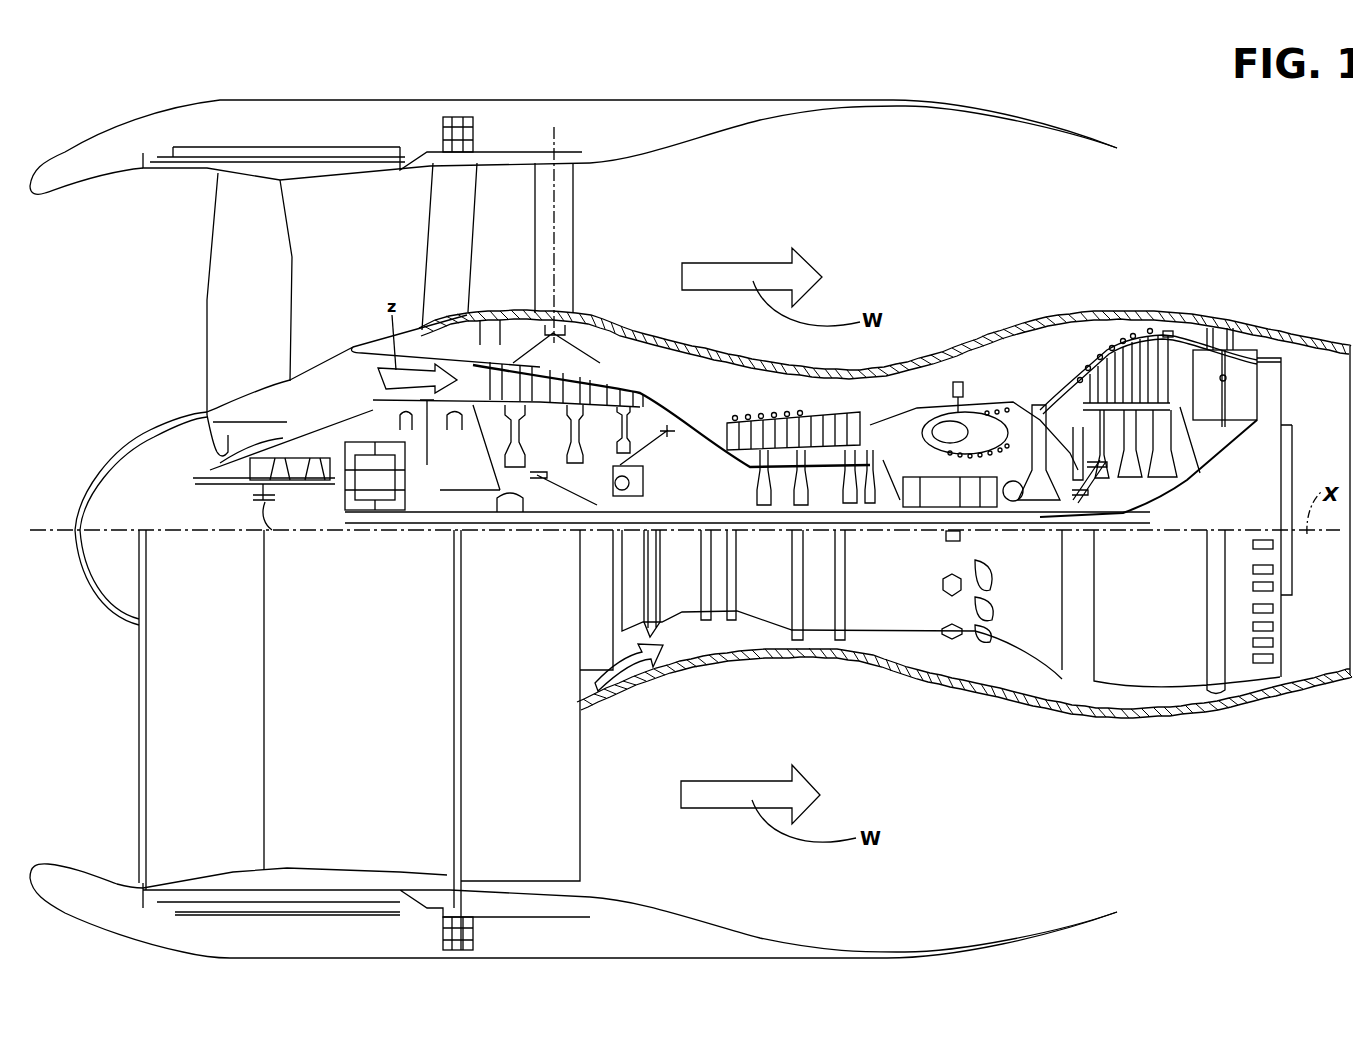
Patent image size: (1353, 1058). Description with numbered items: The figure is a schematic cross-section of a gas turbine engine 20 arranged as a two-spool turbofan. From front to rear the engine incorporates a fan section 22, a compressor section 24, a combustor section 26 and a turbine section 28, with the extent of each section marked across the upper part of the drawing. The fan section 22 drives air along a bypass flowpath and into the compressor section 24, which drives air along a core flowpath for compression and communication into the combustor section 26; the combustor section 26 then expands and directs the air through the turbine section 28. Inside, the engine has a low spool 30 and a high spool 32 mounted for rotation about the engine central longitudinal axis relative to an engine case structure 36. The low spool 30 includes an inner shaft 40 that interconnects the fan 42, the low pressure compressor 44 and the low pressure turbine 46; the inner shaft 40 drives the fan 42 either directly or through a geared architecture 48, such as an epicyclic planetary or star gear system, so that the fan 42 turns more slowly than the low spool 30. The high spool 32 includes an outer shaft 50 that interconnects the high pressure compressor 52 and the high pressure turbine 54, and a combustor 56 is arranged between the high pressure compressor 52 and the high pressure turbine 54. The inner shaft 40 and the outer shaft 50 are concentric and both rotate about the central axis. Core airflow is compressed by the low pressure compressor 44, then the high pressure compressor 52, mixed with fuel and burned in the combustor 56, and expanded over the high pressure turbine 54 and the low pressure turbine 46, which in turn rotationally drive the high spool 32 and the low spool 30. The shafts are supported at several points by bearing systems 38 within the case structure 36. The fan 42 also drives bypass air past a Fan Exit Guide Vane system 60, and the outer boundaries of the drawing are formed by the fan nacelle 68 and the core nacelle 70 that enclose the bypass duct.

The gas turbine engine 20 is at (1160, 194).
The fan section 22 is at (417, 95).
The compressor section 24 is at (850, 232).
The combustor section 26 is at (977, 232).
The turbine section 28 is at (1222, 232).
The low spool 30 is at (665, 488).
The high spool 32 is at (881, 483).
The engine case structure 36 is at (820, 640).
The bearing systems 38 is at (445, 602).
The inner shaft 40 is at (1007, 514).
The fan 42 is at (262, 320).
The low pressure compressor 44 is at (615, 381).
The low pressure turbine 46 is at (1142, 382).
The geared architecture 48 is at (374, 500).
The outer shaft 50 is at (1000, 500).
The high pressure compressor 52 is at (748, 445).
The high pressure turbine 54 is at (1041, 425).
The combustor 56 is at (975, 437).
The Fan Exit Guide Vane system 60 is at (433, 277).
The fan nacelle 68 is at (690, 100).
The core nacelle 70 is at (1257, 266).